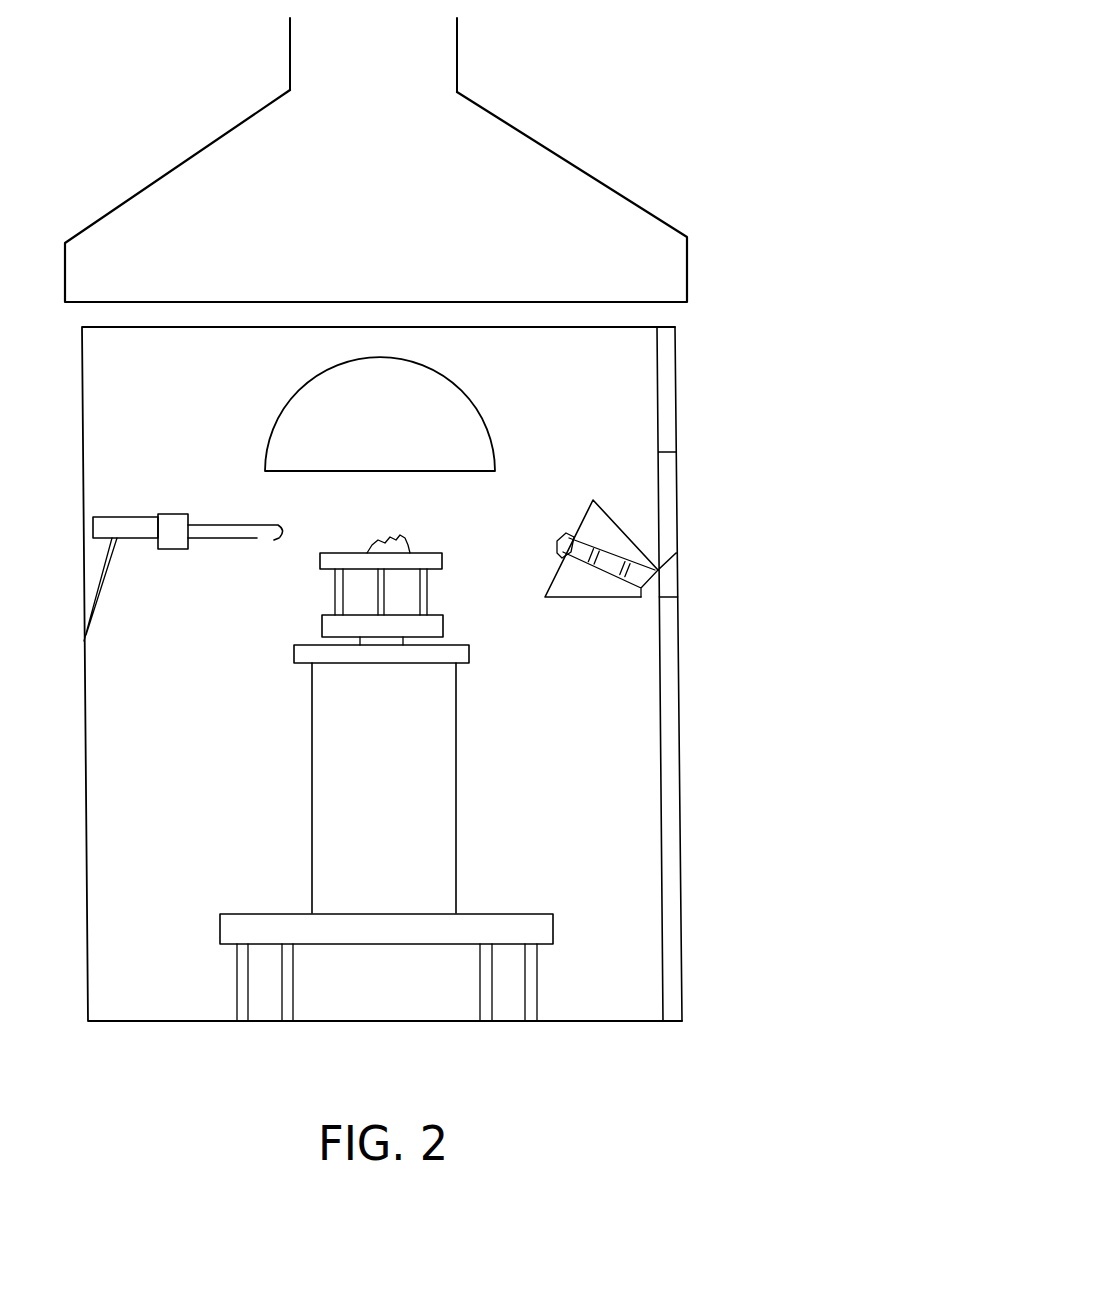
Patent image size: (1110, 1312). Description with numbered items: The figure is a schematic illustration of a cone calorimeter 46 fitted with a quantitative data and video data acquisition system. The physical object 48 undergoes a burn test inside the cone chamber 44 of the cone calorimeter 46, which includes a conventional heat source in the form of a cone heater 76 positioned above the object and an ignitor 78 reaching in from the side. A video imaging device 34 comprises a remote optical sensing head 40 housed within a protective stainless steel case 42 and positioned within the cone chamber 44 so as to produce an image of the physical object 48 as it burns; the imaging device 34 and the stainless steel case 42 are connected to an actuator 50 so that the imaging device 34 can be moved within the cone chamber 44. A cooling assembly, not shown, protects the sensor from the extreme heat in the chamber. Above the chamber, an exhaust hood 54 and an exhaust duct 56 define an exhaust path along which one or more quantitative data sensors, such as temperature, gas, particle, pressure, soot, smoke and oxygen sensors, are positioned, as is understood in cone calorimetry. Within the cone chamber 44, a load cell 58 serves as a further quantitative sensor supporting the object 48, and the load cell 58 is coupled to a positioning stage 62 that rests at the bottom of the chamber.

The video imaging device 34 is at (584, 634).
The remote optical sensing head 40 is at (528, 533).
The protective stainless steel case 42 is at (603, 512).
The cone chamber 44 is at (145, 376).
The cone calorimeter 46 is at (776, 104).
The physical object 48 is at (370, 545).
The actuator 50 is at (676, 383).
The exhaust hood 54 is at (573, 163).
The exhaust duct 56 is at (457, 52).
The load cell 58 is at (320, 625).
The positioning stage 62 is at (220, 927).
The cone heater 76 is at (473, 392).
The ignitor 78 is at (205, 525).